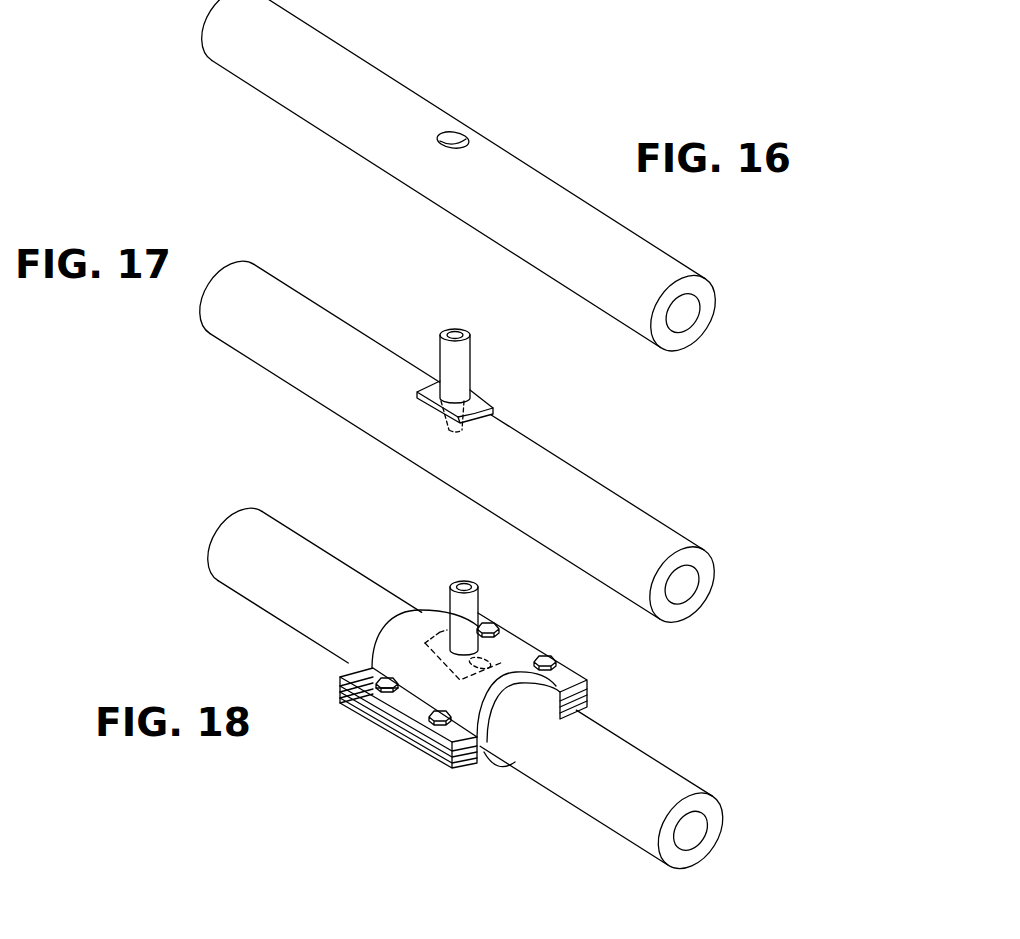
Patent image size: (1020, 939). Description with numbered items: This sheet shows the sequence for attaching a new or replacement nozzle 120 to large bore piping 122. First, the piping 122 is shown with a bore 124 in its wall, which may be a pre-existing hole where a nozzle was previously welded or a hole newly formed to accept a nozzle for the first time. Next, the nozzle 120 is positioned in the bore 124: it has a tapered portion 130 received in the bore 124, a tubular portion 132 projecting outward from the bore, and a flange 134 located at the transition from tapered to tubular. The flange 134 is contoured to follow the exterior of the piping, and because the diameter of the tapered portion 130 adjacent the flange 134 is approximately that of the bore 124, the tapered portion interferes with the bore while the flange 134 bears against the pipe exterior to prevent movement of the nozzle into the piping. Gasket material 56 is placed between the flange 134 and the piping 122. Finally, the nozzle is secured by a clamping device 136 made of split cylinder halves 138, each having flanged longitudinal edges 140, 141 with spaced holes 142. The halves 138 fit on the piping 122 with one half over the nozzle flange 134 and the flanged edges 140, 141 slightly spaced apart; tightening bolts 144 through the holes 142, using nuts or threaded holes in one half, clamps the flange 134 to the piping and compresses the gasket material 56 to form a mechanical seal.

In FIG. 18, the gasket material 56 is at (432, 634).
In FIG. 16, the nozzle 120 is at (448, 181).
In FIG. 17, the nozzle 120 is at (472, 360).
In FIG. 18, the nozzle 120 is at (480, 606).
In FIG. 16, the piping 122 is at (672, 253).
In FIG. 17, the piping 122 is at (616, 490).
In FIG. 18, the piping 122 is at (647, 755).
In FIG. 16, the bore 124 is at (455, 135).
In FIG. 17, the bore 124 is at (468, 400).
In FIG. 18, the bore 124 is at (492, 655).
In FIG. 17, the tapered portion 130 is at (447, 422).
In FIG. 18, the tapered portion 130 is at (537, 692).
In FIG. 17, the tubular portion 132 is at (443, 352).
In FIG. 18, the tubular portion 132 is at (452, 592).
In FIG. 17, the flange 134 is at (492, 409).
In FIG. 18, the flange 134 is at (428, 650).
In FIG. 18, the clamping device 136 is at (468, 721).
In FIG. 18, the split cylinder halves 138 is at (480, 688).
In FIG. 18, the flanged longitudinal edge 140 is at (568, 678).
In FIG. 18, the flanged longitudinal edge 141 is at (586, 697).
In FIG. 18, the holes 142 is at (438, 728).
In FIG. 18, the bolts 144 is at (383, 686).